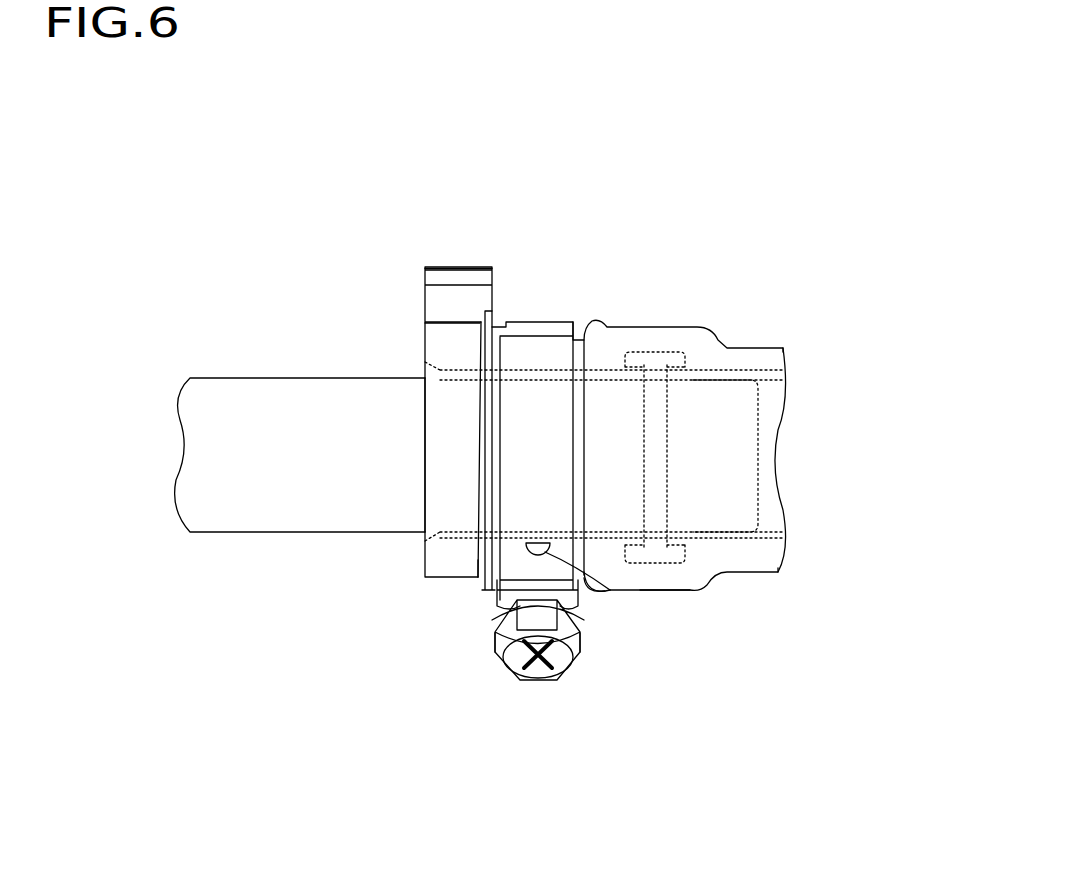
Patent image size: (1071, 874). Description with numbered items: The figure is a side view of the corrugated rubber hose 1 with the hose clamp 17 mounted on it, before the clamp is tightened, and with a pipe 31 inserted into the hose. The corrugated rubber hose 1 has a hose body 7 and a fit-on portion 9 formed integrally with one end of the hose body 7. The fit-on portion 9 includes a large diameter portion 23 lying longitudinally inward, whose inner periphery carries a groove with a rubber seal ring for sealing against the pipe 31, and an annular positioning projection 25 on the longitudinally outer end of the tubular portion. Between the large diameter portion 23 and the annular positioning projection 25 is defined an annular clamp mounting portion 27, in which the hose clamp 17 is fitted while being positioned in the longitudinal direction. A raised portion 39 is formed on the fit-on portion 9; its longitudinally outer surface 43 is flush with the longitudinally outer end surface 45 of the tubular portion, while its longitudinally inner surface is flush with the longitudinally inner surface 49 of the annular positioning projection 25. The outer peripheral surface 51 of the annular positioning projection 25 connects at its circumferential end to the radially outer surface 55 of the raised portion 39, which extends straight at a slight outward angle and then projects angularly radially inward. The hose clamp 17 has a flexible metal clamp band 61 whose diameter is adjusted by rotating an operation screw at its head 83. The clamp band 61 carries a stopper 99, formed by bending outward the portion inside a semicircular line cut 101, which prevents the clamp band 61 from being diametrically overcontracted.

The corrugated rubber hose 1 is at (610, 447).
The hose body 7 is at (760, 590).
The fit-on portion 9 is at (598, 302).
The hose clamp 17 is at (592, 617).
The large diameter portion 23 is at (683, 592).
The annular positioning projection 25 is at (470, 587).
The annular clamp mounting portion 27 is at (582, 333).
The pipe 31 is at (260, 498).
The raised portion 39 is at (455, 265).
The longitudinally outer surfaces 43 is at (425, 275).
The longitudinally outer end surface 45 is at (425, 449).
The longitudinally inner surface 49 is at (493, 300).
The outer peripheral surface 51 is at (487, 540).
The radially outer surface 55 is at (453, 313).
The clamp band 61 is at (537, 350).
The head 83 is at (537, 663).
The stopper 99 is at (537, 552).
The semicircular line cut 101 is at (585, 590).